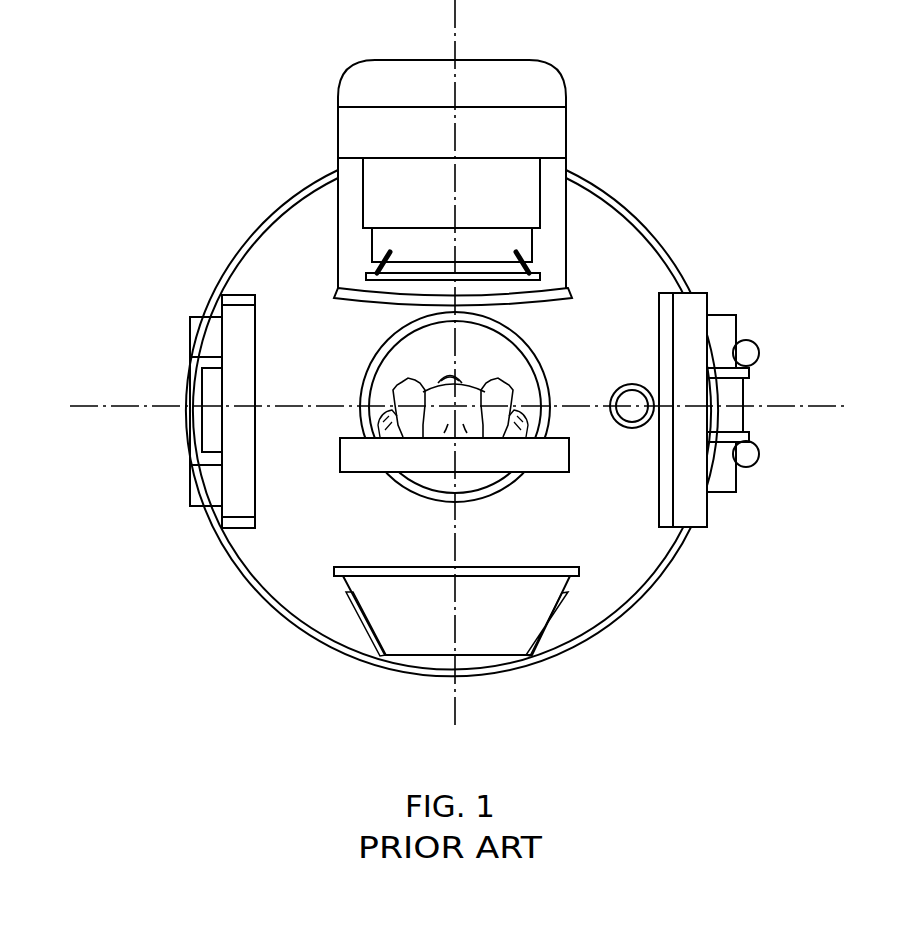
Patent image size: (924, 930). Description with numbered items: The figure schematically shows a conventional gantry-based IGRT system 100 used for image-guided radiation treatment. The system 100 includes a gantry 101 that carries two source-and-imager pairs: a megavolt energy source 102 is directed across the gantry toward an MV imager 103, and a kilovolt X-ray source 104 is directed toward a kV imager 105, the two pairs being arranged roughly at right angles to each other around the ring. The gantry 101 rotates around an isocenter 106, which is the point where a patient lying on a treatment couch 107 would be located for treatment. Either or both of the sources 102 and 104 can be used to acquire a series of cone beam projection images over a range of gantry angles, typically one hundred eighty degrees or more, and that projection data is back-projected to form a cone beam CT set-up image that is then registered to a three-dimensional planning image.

The gantry-based IGRT system 100 is at (763, 120).
The gantry 101 is at (640, 220).
The megavolt (MV) energy source 102 is at (555, 126).
The MV imager 103 is at (525, 620).
The kilovolt (kV) X-ray source 104 is at (703, 287).
The kV imager 105 is at (192, 398).
The isocenter 106 is at (453, 405).
The treatment couch 107 is at (357, 457).